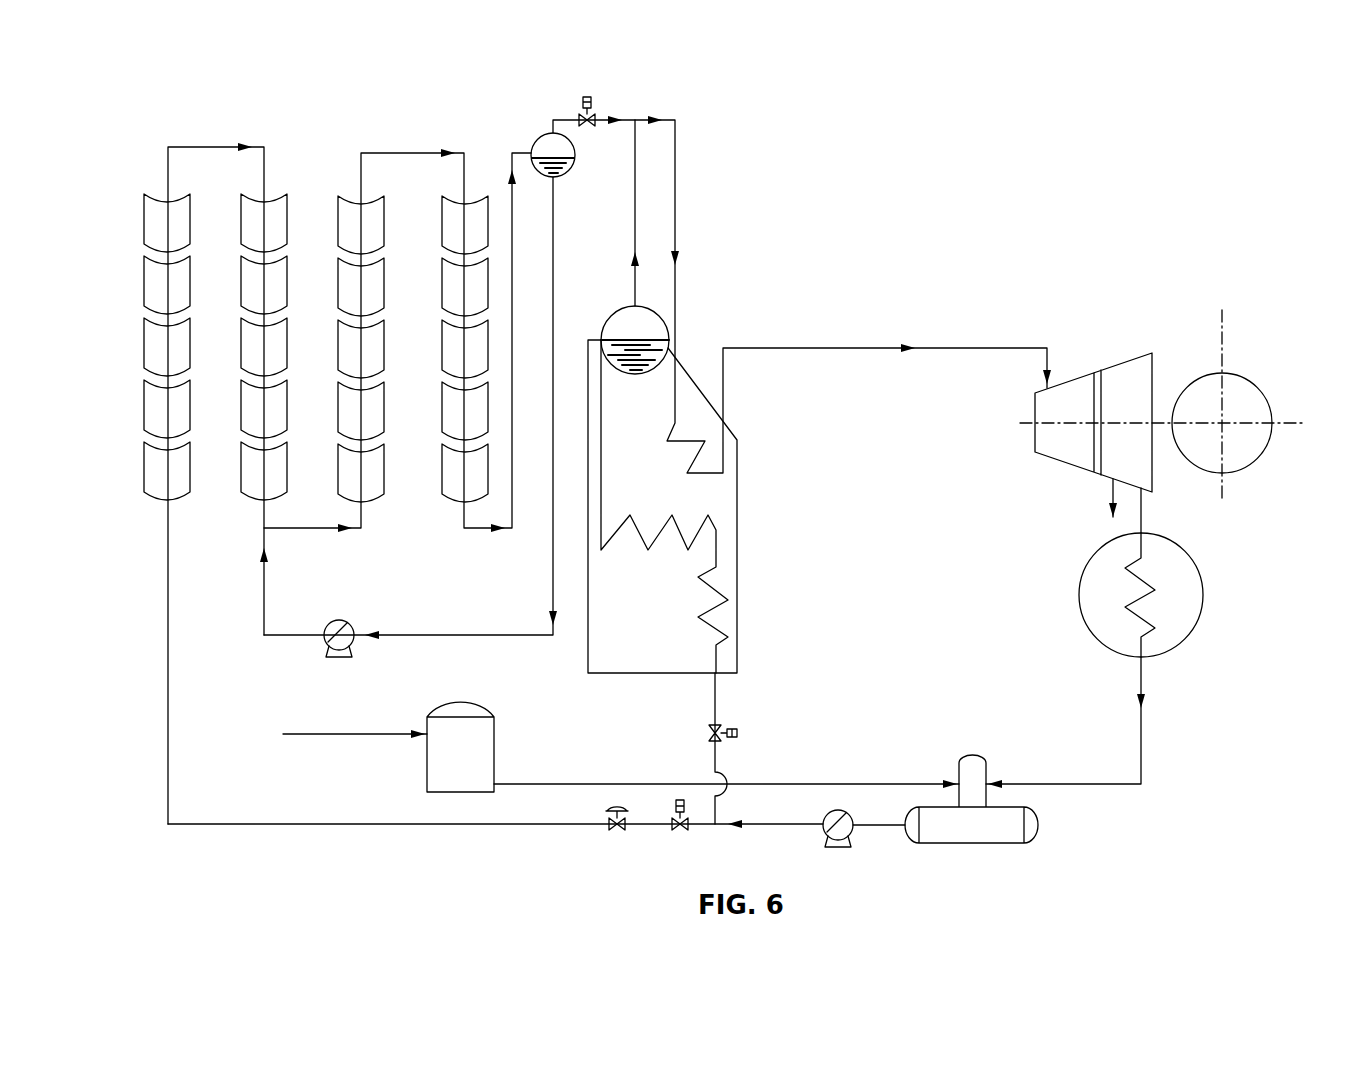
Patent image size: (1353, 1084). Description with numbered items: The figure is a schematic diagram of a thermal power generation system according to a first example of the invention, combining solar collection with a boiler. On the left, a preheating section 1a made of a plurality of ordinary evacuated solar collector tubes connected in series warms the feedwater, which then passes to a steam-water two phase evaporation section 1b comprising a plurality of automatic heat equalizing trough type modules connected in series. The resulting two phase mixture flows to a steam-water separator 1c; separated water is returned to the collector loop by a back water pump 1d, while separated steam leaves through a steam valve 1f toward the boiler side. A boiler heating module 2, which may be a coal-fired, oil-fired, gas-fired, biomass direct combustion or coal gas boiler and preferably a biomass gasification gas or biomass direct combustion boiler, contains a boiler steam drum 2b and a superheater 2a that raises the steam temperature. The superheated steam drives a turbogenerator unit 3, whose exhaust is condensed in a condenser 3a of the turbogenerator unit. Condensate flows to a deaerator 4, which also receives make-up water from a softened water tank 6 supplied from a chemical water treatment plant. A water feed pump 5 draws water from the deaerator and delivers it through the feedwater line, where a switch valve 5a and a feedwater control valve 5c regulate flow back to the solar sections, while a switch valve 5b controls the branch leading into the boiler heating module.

The preheating section 1a is at (191, 472).
The steam-water two phase evaporation section 1b is at (337, 472).
The steam-water separator 1c is at (538, 145).
The back water pump 1d is at (350, 648).
The steam valve 1f is at (595, 126).
The boiler heating module 2 is at (588, 647).
The superheater 2a is at (703, 473).
The boiler steam drum 2b is at (618, 307).
The turbogenerator unit 3 is at (1065, 400).
The condenser of the turbogenerator unit 3a is at (1107, 584).
The deaerator 4 is at (965, 778).
The water feed pump 5 is at (825, 830).
The switch valve 5a is at (686, 829).
The switch valve 5b is at (737, 736).
The feedwater control valve 5c is at (623, 829).
The softened water tank 6 is at (488, 760).